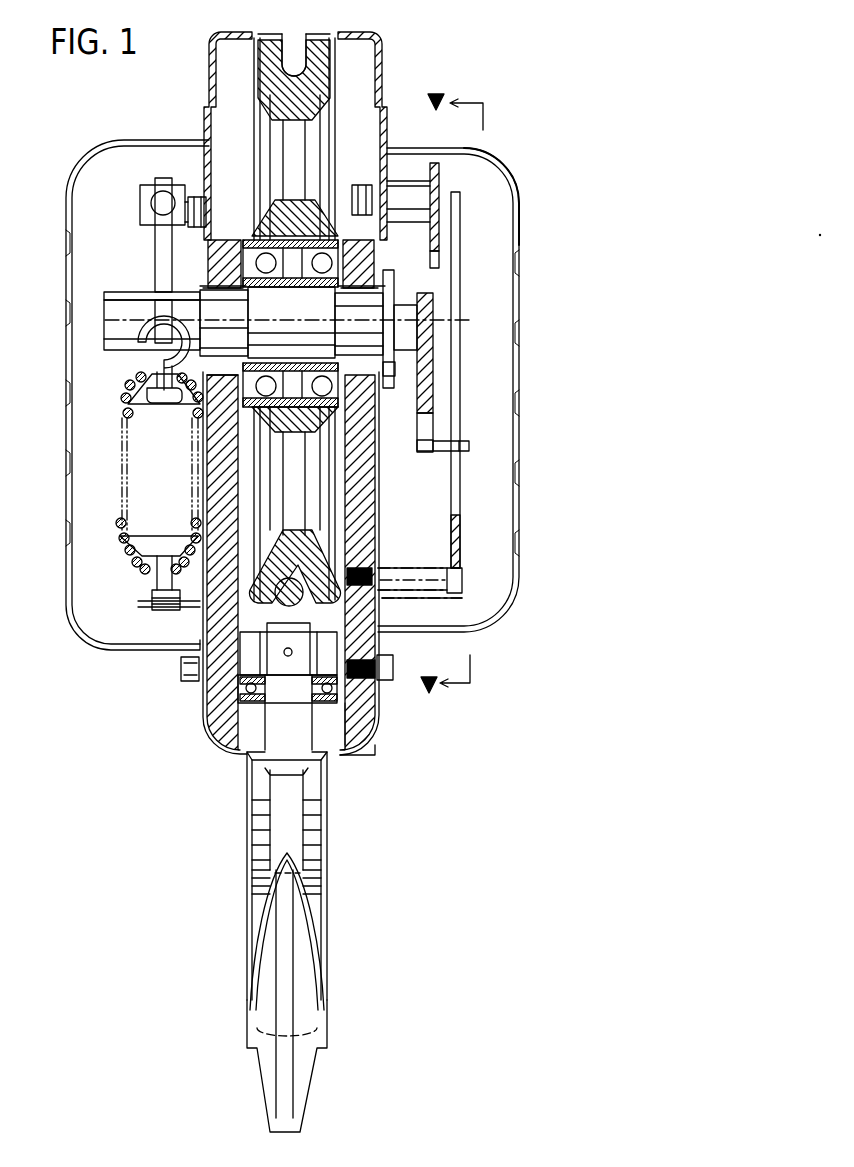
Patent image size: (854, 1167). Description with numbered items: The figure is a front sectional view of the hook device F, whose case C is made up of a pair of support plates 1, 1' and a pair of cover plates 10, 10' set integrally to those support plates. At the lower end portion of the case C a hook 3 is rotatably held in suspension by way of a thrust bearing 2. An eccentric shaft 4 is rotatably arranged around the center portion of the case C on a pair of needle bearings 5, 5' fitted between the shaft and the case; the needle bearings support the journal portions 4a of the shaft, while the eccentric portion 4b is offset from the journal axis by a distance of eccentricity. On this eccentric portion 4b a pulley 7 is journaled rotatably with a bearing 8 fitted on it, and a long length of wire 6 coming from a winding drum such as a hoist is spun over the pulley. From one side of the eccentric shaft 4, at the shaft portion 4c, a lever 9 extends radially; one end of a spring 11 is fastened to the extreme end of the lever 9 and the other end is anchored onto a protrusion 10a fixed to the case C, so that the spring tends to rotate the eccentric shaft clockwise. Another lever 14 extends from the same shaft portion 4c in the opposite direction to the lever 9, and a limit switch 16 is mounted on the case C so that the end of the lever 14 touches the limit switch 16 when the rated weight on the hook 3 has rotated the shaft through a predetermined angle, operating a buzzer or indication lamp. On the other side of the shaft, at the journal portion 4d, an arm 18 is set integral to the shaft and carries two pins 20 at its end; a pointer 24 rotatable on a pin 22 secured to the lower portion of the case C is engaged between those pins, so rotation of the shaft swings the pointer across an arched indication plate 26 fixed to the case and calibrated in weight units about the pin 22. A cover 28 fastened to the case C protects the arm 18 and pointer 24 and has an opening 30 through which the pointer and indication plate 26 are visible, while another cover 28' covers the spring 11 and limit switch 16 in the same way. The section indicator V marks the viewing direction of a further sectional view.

The support plate 1 is at (213, 565).
The support plate 1' is at (376, 566).
The thrust bearing 2 is at (340, 673).
The hook 3 is at (310, 928).
The eccentric shaft 4 is at (373, 348).
The journal portion 4a is at (200, 333).
The eccentric portion 4b is at (200, 343).
The shaft portion 4c is at (108, 318).
The journal portion 4d is at (416, 318).
The needle bearing 5 is at (188, 260).
The needle bearing 5' is at (399, 404).
The wire 6 is at (302, 40).
The pulley 7 is at (430, 636).
The bearing 8 is at (205, 245).
The lever 9 is at (102, 297).
The cover plate 10 is at (180, 691).
The cover plate 10' is at (356, 772).
The protrusion 10a is at (150, 603).
The spring 11 is at (122, 545).
The lever 14 is at (148, 205).
The limit switch 16 is at (145, 204).
The arm 18 is at (428, 450).
The pin 20 is at (470, 448).
The pin 22 is at (430, 588).
The pointer 24 is at (456, 358).
The indication plate 26 is at (434, 163).
The cover 28 is at (467, 390).
The cover 28' is at (115, 395).
The opening 30 is at (518, 244).
The case C is at (350, 752).
The hook device F is at (490, 88).
The section line V is at (561, 622).